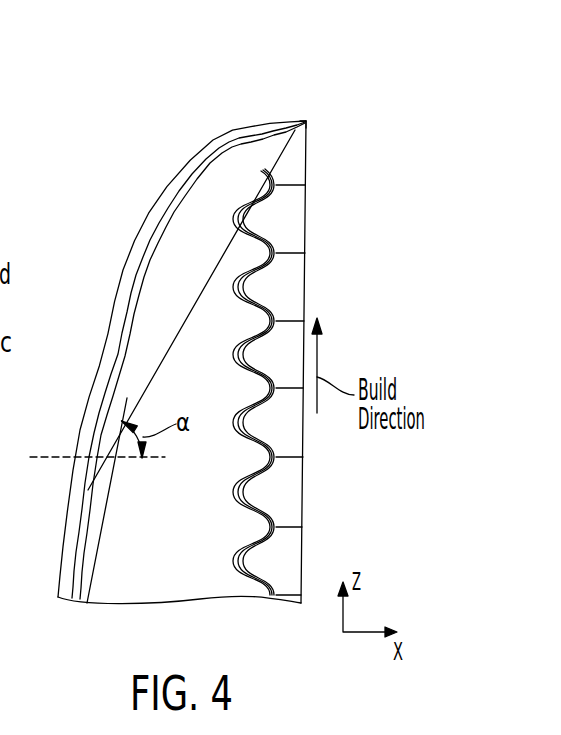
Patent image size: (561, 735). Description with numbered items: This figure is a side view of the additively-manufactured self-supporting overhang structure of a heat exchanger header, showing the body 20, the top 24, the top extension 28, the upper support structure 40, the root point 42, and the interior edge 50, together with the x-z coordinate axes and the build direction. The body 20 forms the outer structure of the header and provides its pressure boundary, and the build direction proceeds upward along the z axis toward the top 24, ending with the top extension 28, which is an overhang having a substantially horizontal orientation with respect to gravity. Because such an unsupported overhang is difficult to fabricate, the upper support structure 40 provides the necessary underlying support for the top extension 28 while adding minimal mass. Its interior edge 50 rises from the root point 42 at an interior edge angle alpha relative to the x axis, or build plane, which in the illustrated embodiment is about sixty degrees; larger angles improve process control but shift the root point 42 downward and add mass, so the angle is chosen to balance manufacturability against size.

The body 20 is at (63, 550).
The top 24 is at (288, 66).
The top extension 28 is at (309, 122).
The upper support structure 40 is at (181, 253).
The root point 42 is at (110, 462).
The interior edge 50 is at (205, 271).